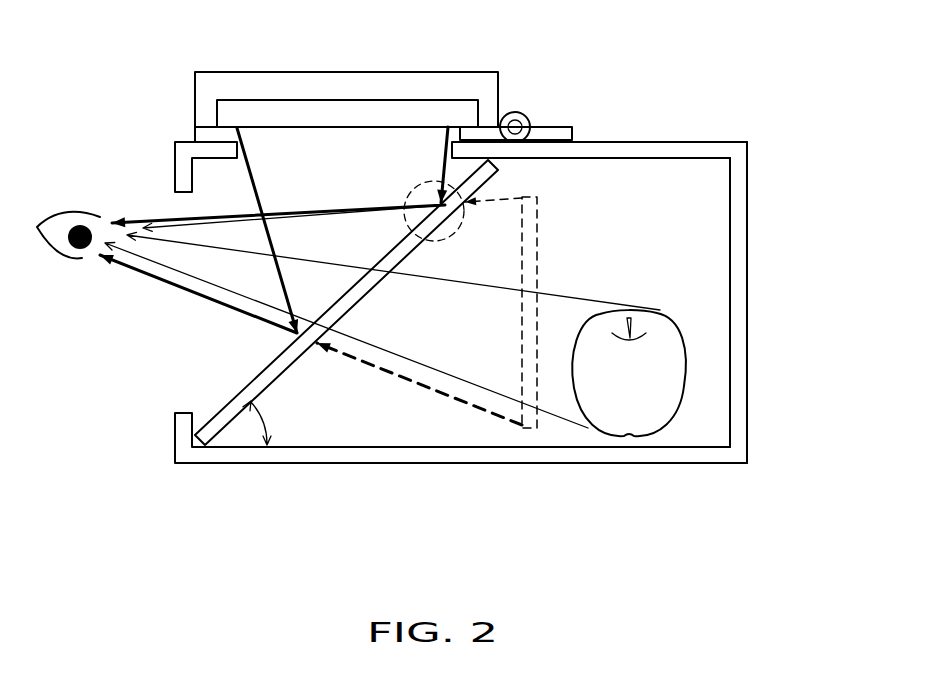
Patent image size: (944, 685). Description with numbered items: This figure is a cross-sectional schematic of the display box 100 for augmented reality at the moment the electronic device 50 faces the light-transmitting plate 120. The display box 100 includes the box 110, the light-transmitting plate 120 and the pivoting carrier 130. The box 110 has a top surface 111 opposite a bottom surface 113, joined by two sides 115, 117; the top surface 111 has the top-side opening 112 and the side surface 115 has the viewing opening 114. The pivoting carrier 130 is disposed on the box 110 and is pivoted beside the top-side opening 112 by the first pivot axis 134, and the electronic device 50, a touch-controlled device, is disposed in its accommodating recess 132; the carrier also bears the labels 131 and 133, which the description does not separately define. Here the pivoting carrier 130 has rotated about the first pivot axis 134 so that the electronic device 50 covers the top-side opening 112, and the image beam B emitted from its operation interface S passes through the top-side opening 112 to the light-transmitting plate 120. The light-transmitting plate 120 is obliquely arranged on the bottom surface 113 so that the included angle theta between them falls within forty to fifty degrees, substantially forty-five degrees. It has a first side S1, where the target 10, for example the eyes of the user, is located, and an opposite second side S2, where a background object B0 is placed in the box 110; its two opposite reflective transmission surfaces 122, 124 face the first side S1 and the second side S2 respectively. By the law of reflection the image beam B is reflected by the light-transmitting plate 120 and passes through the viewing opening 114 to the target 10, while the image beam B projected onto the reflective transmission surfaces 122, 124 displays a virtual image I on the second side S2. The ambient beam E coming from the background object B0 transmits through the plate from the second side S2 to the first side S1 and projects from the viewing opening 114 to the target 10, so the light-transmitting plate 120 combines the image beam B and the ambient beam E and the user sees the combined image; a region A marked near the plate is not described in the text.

The target 10 is at (64, 227).
The electronic device 50 is at (227, 115).
The display box 100 is at (840, 575).
The box 110 is at (453, 305).
The top surface 111 is at (702, 155).
The top-side opening 112 is at (304, 138).
The bottom surface 113 is at (550, 453).
The viewing opening 114 is at (142, 336).
The side surface 115 is at (183, 173).
The side 117 is at (738, 315).
The light-transmitting plate 120 is at (228, 417).
The reflective transmission surface 122 is at (217, 394).
The reflective transmission surface 124 is at (289, 380).
The pivoting carrier 130 is at (381, 81).
The top portion of cover 131 is at (208, 82).
The accommodating recess 132 is at (415, 136).
The connecting portion of cover 133 is at (558, 135).
The first pivot axis 134 is at (517, 118).
The operation interface S is at (332, 138).
The first side S1 is at (212, 366).
The second side S2 is at (396, 417).
The region A is at (415, 192).
The image beam B is at (133, 223).
The ambient beam E is at (160, 238).
The image I is at (530, 247).
The background object B0 is at (665, 382).
The included angle theta is at (266, 423).